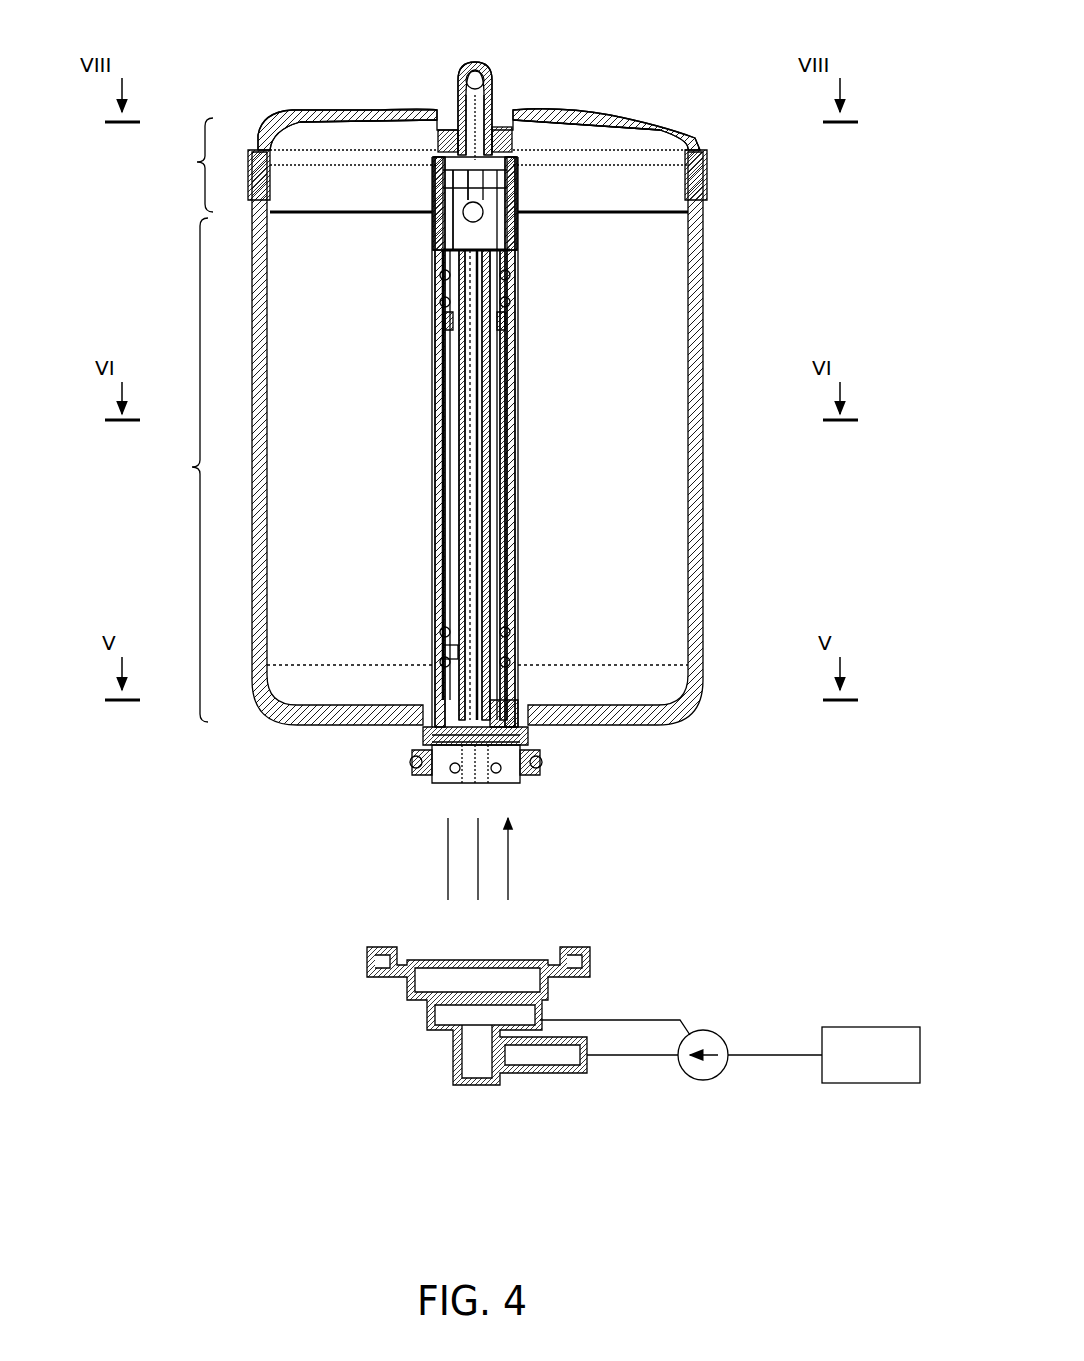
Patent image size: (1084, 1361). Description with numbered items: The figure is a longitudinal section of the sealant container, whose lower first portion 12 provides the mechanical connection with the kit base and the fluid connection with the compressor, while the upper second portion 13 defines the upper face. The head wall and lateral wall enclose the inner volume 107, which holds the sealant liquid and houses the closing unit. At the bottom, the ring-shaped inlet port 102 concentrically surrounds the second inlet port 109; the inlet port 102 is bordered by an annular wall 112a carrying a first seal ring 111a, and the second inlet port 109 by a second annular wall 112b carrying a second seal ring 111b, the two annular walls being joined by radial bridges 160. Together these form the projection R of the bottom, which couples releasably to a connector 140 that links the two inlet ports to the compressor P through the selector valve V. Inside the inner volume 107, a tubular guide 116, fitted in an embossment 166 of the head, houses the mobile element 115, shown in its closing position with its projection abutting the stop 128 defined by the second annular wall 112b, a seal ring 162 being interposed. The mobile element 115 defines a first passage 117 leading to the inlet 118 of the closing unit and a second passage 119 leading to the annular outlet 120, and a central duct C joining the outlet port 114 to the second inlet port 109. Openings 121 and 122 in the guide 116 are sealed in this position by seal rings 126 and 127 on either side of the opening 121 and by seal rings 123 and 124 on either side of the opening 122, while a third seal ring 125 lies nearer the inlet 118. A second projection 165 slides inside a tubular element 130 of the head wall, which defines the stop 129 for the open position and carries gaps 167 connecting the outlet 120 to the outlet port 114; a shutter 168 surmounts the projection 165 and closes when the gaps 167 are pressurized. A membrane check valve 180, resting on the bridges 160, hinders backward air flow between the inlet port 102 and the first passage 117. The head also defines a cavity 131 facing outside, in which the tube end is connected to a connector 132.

The inner volume 107 is at (672, 470).
The second portion 13 is at (429, 160).
The first portion 12 is at (180, 470).
The connector 132 is at (470, 60).
The outlet port 114 is at (490, 125).
The shutter 168 is at (448, 110).
The outlet 120 is at (500, 148).
The cavity 131 is at (432, 140).
The embossment 166 is at (535, 155).
The second projection 165 is at (520, 262).
The tubular element 130 is at (490, 215).
The gaps 167 is at (448, 200).
The stop 129 is at (470, 240).
The guide 116 is at (432, 390).
The second passage 119 is at (442, 495).
The first passage 117 is at (500, 552).
The inlet 118 is at (488, 680).
The duct C is at (498, 640).
The seal ring 123 is at (432, 562).
The seal ring 126 is at (440, 285).
The opening 121 is at (510, 305).
The mobile element 115 is at (520, 300).
The seal ring 127 is at (435, 325).
The opening 122 is at (435, 628).
The seal ring 124 is at (440, 635).
The third seal ring 125 is at (440, 660).
The check valve 180 is at (510, 705).
The seal ring 162 is at (425, 738).
The radial bridges 160 is at (525, 745).
The inlet port 102 is at (500, 790).
The first seal ring 111a is at (543, 766).
The second seal ring 111b is at (420, 775).
The annular wall 112a is at (532, 780).
The second annular wall 112b is at (440, 785).
The stop 128 is at (512, 790).
The second inlet port 109 is at (470, 790).
The projection R is at (500, 795).
The connector 140 is at (430, 1030).
The selector valve V is at (712, 1040).
The compressor P is at (877, 1042).